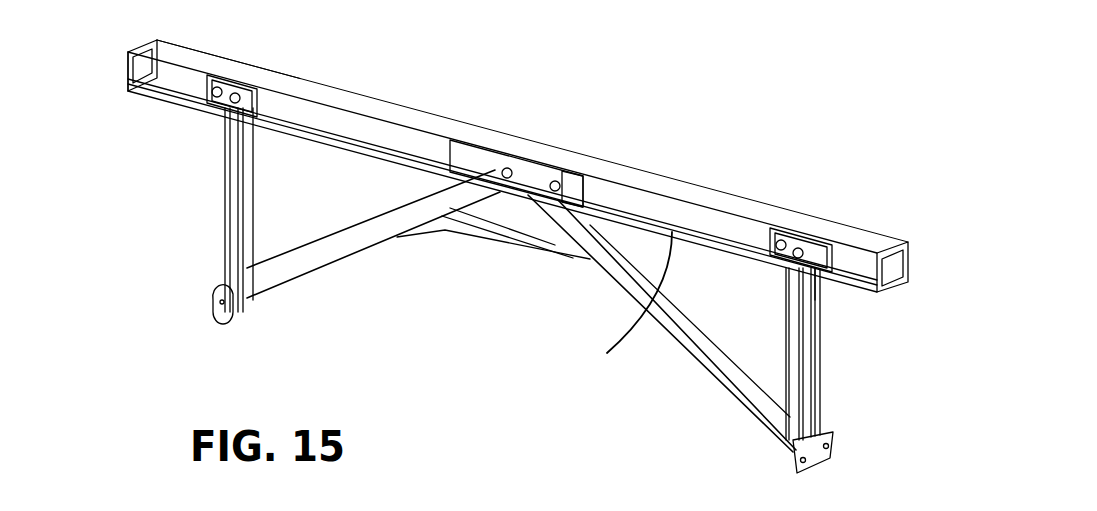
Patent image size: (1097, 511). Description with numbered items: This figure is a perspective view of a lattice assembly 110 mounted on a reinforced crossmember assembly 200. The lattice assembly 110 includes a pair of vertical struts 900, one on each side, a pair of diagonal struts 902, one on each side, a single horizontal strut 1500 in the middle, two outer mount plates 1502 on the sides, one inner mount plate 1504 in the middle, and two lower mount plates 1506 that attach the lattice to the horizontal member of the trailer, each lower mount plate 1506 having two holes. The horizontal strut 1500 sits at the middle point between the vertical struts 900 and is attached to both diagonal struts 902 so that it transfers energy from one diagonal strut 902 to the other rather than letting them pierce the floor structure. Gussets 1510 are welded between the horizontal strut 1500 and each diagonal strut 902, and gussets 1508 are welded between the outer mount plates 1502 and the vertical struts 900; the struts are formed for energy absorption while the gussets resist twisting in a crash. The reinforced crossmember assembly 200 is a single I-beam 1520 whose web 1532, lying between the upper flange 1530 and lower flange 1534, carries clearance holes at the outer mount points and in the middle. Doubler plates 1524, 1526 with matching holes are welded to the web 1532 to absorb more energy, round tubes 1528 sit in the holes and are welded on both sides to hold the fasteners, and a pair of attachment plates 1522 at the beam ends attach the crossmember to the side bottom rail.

The lattice assembly 110 is at (512, 88).
The reinforced crossmember assembly 200 is at (116, 49).
The vertical strut 900 is at (227, 183).
The diagonal strut 902 is at (313, 233).
The horizontal strut 1500 is at (508, 240).
The outer mount plate 1502 is at (213, 113).
The inner mount plate 1504 is at (560, 190).
The lower mount plate 1506 is at (213, 303).
The gusset 1508 is at (815, 282).
The gusset 1510 is at (422, 235).
The I-beam 1520 is at (353, 100).
The attachment plate 1522 is at (127, 80).
The doubler plate 1524 is at (443, 168).
The doubler plate 1526 is at (213, 83).
The round tube 1528 is at (847, 220).
The upper flange 1530 is at (383, 110).
The web 1532 is at (420, 145).
The lower flange 1534 is at (607, 306).